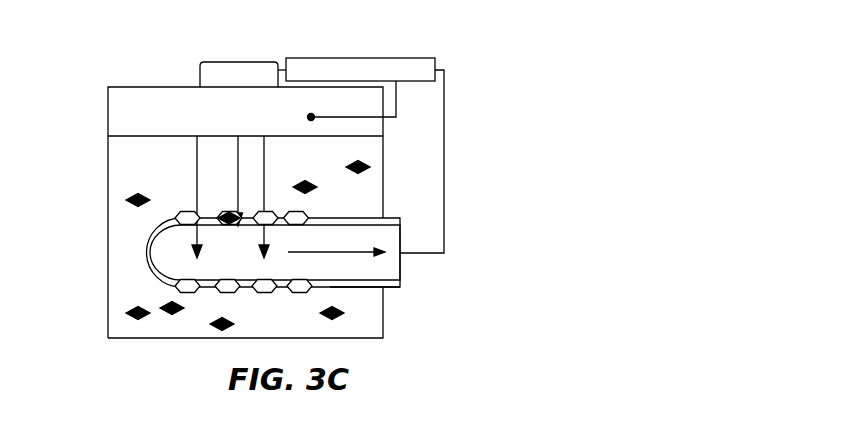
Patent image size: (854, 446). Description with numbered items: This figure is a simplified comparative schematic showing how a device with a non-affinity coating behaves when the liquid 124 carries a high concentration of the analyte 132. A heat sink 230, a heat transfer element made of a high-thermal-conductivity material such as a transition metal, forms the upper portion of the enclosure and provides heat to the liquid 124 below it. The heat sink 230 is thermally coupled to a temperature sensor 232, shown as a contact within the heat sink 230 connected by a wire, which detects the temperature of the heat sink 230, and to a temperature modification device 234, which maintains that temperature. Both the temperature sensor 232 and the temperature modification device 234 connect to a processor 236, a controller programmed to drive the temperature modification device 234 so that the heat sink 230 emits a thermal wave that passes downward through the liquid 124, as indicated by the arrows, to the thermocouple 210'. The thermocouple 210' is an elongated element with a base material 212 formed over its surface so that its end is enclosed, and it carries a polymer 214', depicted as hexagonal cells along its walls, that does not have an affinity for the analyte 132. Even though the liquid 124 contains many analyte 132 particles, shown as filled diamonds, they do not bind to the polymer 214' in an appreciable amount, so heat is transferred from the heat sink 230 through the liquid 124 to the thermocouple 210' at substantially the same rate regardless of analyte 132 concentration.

The heat sink 230 is at (140, 103).
The temperature modification device 234 is at (236, 62).
The processor 236 is at (358, 58).
The temperature sensor 232 is at (350, 118).
The polymer 214' is at (346, 234).
The thermocouple 210' is at (320, 256).
The base material 212 is at (390, 286).
The liquid 124 is at (120, 301).
The analyte 132 is at (168, 318).